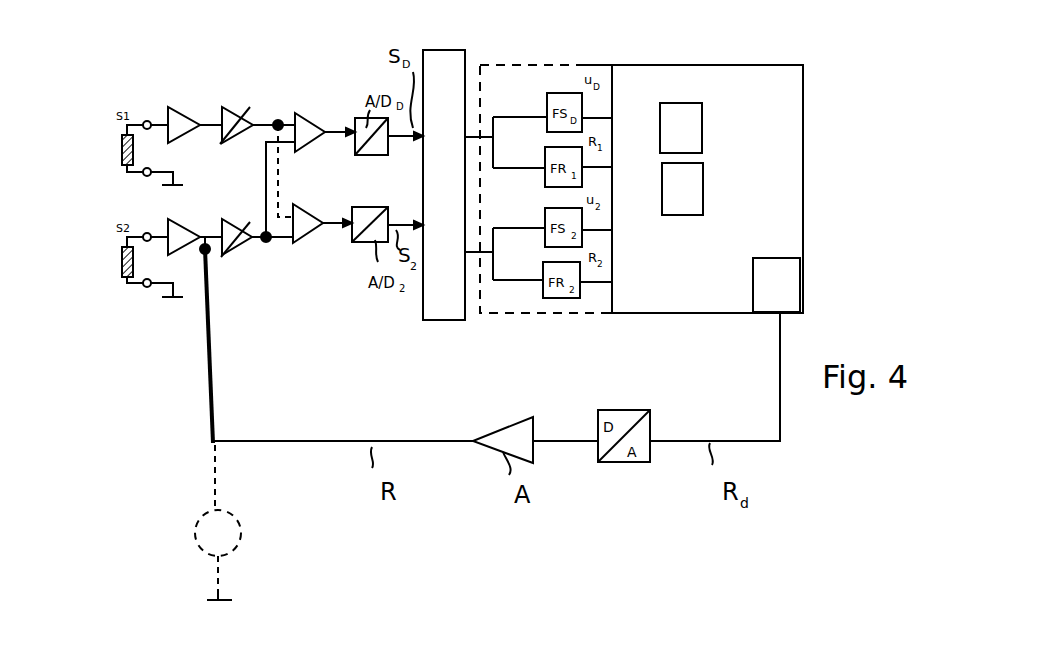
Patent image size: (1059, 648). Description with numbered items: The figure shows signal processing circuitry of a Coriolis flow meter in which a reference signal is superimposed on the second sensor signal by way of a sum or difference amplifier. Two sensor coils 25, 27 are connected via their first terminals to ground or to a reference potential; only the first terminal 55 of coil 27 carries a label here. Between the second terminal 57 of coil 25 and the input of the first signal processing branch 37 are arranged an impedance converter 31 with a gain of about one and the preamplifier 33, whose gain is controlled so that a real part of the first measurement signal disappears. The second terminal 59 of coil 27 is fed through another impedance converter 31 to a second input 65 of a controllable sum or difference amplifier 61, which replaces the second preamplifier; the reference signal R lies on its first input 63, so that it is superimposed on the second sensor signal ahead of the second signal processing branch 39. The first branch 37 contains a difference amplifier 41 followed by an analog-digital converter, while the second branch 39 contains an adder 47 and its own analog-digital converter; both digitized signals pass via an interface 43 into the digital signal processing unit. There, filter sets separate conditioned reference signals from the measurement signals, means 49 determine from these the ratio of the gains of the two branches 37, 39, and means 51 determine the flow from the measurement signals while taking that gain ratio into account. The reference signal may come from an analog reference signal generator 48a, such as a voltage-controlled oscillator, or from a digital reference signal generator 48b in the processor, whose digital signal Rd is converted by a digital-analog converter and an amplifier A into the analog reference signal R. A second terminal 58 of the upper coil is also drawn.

The coil 25 is at (119, 144).
The coil 27 is at (119, 250).
The impedance converter 31 is at (195, 178).
The preamplifier 33 is at (226, 108).
The first signal processing branch 37 is at (332, 92).
The second signal processing branch 39 is at (336, 252).
The difference amplifier 41 is at (300, 112).
The interface 43 is at (441, 315).
The adder 47 is at (305, 244).
The analog reference signal generator 48a is at (195, 533).
The digital reference signal generator 48b is at (776, 285).
The means for determining a ratio of the gains 49 is at (681, 128).
The means for determining the flow 51 is at (682, 189).
The first terminal 55 is at (144, 287).
The second terminal 57 is at (147, 121).
The switch contact 58 is at (143, 175).
The second terminal 59 is at (148, 233).
The controllable sum or difference amplifier 61 is at (254, 246).
The first input 63 is at (216, 255).
The second input 65 is at (224, 232).